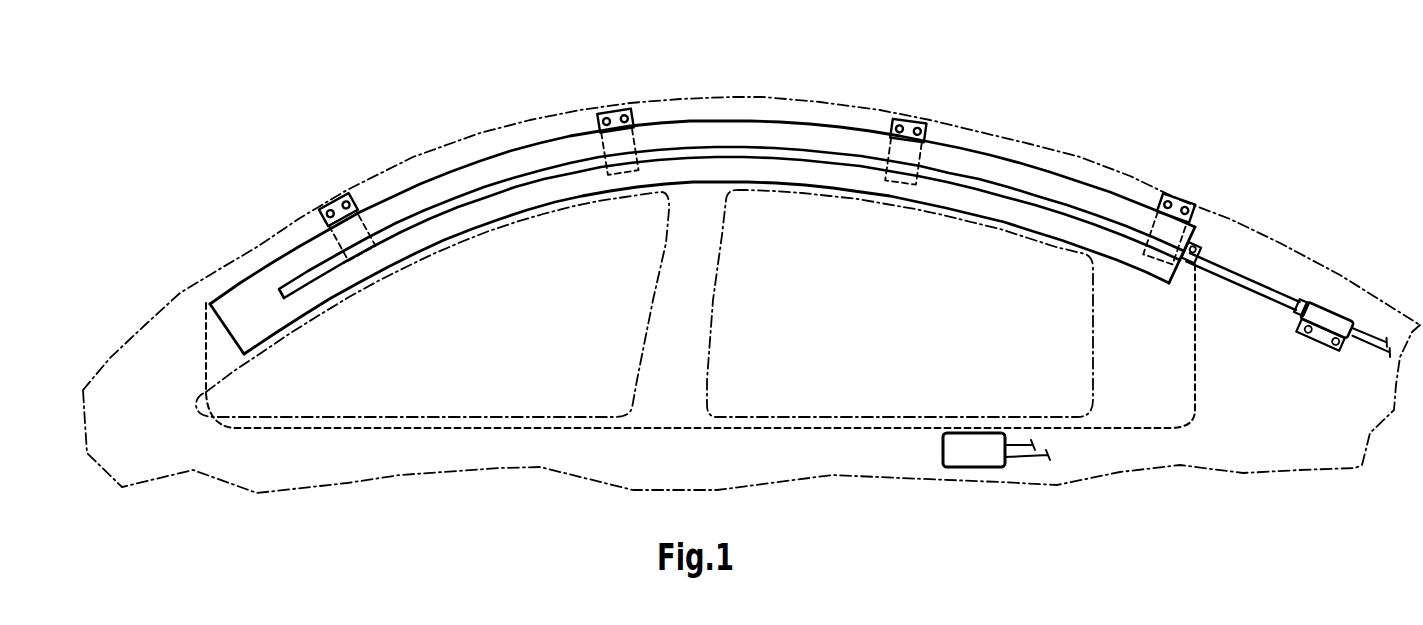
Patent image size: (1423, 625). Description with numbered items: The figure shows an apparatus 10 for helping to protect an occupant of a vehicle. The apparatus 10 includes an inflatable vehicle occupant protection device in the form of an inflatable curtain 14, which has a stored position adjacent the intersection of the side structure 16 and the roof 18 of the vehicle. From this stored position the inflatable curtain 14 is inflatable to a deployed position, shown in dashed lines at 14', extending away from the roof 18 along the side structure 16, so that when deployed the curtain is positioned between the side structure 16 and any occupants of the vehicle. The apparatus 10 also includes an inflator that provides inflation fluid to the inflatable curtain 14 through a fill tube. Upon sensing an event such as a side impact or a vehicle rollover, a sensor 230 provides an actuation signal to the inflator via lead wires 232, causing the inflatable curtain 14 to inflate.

The apparatus 10 is at (415, 93).
The inflatable curtain 14 is at (702, 231).
The deployed position of the inflatable curtain 14' is at (700, 368).
The side structure 16 is at (623, 457).
The roof 18 is at (763, 98).
The sensor 230 is at (977, 448).
The lead wires 232 is at (1015, 458).